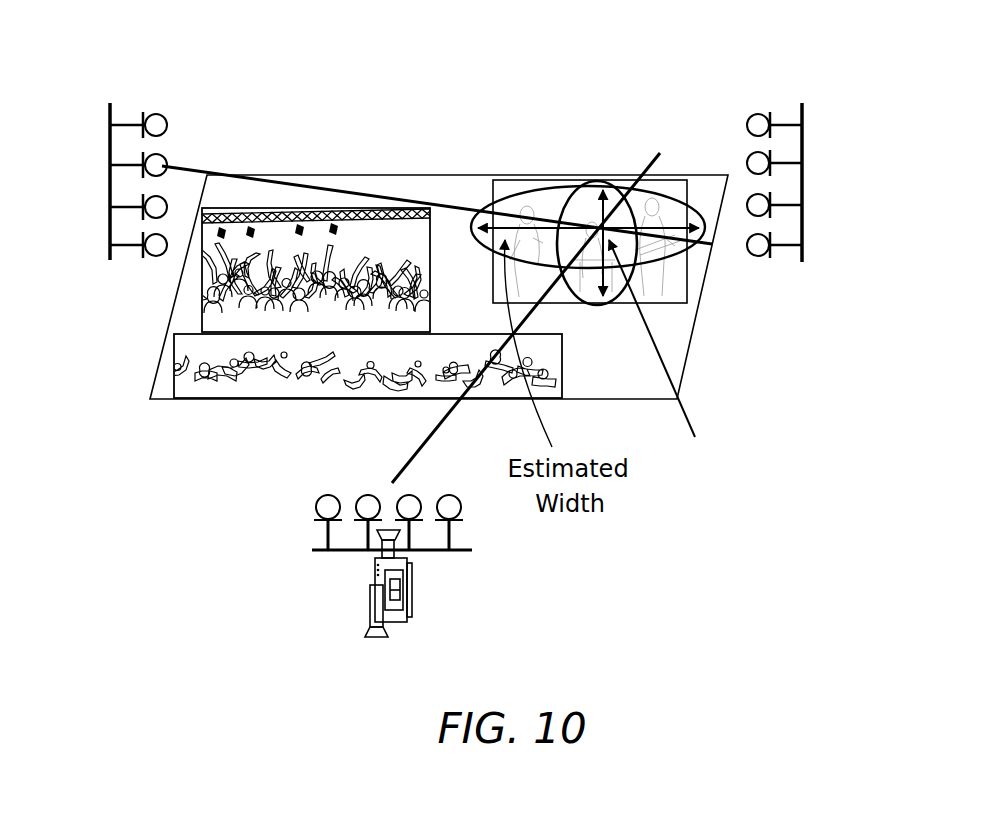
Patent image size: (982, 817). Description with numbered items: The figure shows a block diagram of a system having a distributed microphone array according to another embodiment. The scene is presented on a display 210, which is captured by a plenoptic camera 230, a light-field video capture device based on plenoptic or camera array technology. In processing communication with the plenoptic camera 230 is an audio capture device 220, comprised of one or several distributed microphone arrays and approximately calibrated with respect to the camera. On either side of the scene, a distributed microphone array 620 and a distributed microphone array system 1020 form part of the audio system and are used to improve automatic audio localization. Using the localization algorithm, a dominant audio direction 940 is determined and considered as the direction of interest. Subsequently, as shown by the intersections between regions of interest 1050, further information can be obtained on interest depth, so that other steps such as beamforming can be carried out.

The display 210 is at (272, 173).
The audio capture device 220 is at (315, 502).
The plenoptic camera 230 is at (371, 593).
The distributed microphone array 620 is at (110, 178).
The distributed microphone array system 1020 is at (803, 175).
The dominant audio direction 940 is at (650, 156).
The intersections between regions of interest 1050 is at (668, 356).